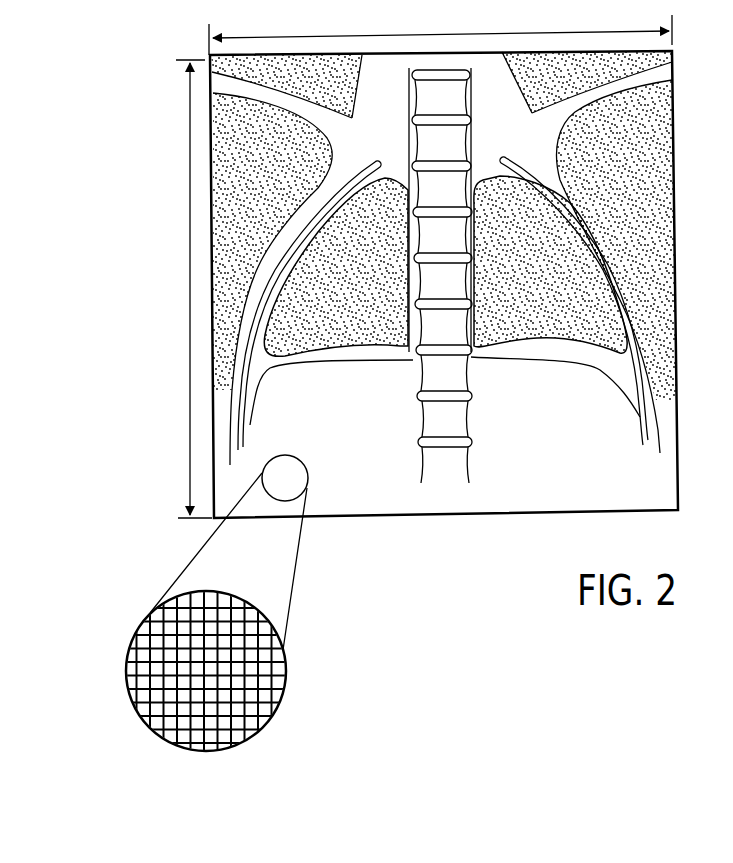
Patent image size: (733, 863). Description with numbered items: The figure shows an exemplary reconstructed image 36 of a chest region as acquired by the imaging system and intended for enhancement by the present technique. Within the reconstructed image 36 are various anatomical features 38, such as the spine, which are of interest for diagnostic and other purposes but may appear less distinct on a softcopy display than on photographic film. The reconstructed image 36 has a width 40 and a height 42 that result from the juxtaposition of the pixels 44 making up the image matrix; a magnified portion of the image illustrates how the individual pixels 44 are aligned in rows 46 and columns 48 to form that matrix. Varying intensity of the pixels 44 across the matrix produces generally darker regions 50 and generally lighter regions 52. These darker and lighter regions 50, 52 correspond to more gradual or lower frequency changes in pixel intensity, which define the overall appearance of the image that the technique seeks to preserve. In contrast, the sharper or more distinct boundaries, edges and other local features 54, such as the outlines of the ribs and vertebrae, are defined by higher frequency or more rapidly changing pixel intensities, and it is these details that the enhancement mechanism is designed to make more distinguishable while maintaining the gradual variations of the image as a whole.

The reconstructed image 36 is at (448, 542).
The features 38 is at (468, 410).
The width 40 is at (445, 31).
The height 42 is at (192, 277).
The pixels 44 is at (252, 690).
The rows 46 is at (127, 626).
The columns 48 is at (158, 753).
The darker regions 50 is at (225, 69).
The lighter regions 52 is at (284, 417).
The boundaries, edges and local features 54 is at (517, 155).